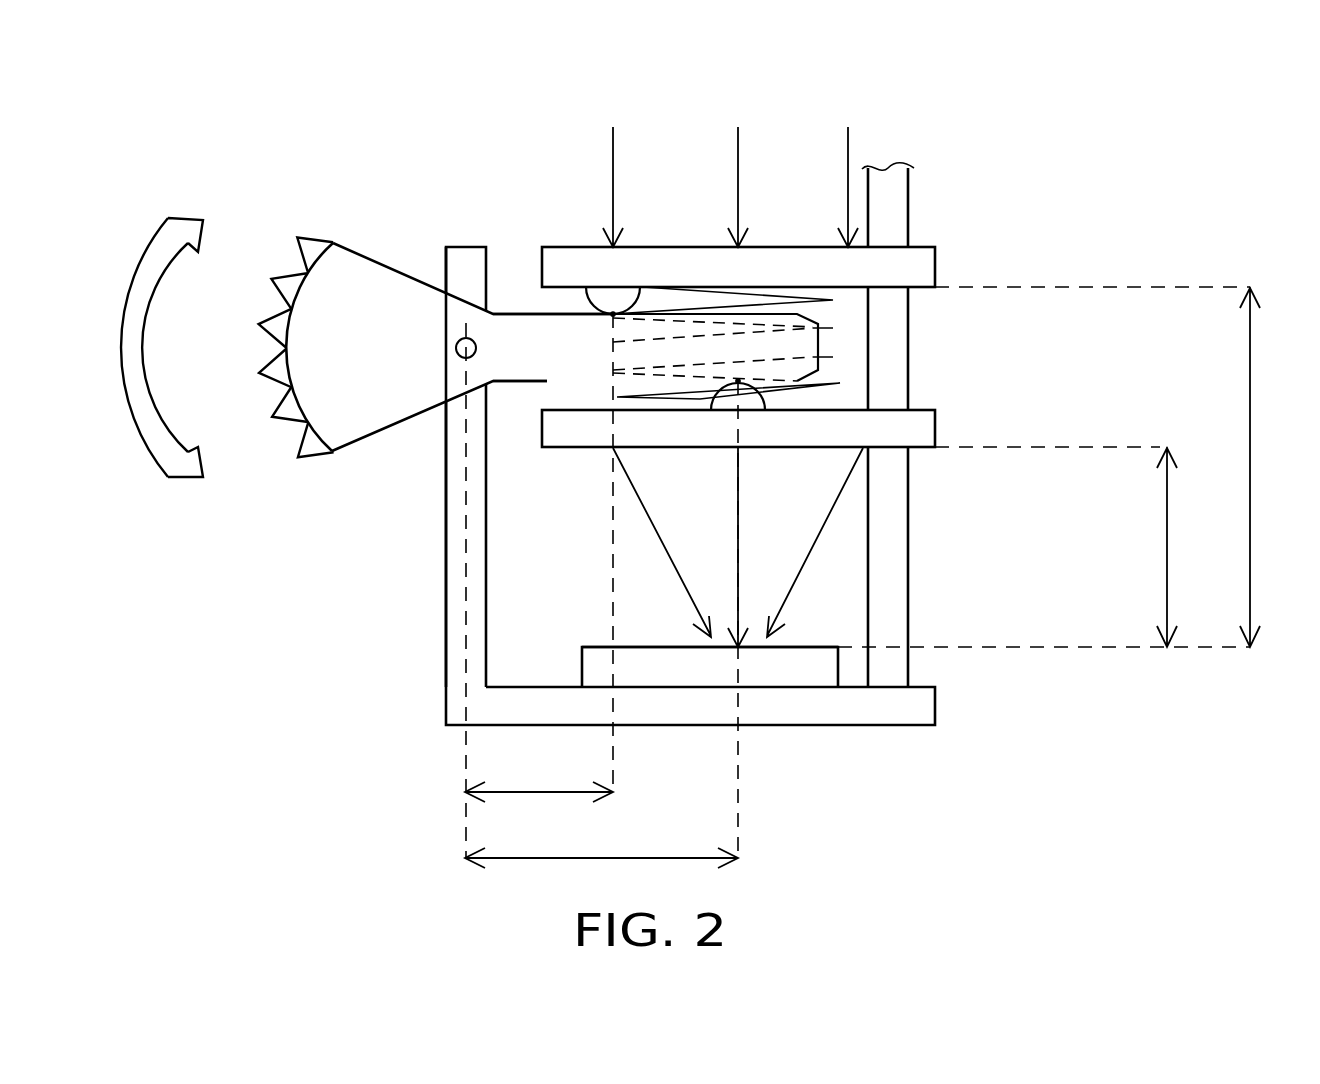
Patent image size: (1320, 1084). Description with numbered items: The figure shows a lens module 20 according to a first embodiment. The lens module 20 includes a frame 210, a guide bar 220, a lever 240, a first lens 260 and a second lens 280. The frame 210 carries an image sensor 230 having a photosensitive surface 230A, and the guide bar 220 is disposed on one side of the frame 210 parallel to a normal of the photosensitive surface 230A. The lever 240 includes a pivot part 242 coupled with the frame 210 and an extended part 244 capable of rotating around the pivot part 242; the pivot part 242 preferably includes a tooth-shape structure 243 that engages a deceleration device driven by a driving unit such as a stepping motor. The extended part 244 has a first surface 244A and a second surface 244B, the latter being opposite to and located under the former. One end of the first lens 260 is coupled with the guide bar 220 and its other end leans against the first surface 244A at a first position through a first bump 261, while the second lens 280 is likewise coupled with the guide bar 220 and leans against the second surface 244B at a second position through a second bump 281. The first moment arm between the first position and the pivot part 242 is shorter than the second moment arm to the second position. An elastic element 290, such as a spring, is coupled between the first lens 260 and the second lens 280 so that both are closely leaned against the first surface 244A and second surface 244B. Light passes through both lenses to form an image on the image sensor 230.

The lens module 20 is at (1268, 119).
The frame 210 is at (935, 705).
The guide bar 220 is at (908, 567).
The image sensor 230 is at (707, 630).
The photosensitive surface 230A is at (807, 647).
The lever 240 is at (412, 498).
The pivot part 242 is at (455, 345).
The tooth-shape structure 243 is at (290, 424).
The extended part 244 is at (634, 407).
The first surface 244A is at (524, 298).
The second surface 244B is at (530, 381).
The first lens 260 is at (810, 239).
The first bump 261 is at (618, 300).
The second lens 280 is at (810, 410).
The second bump 281 is at (762, 400).
The elastic element 290 is at (742, 290).